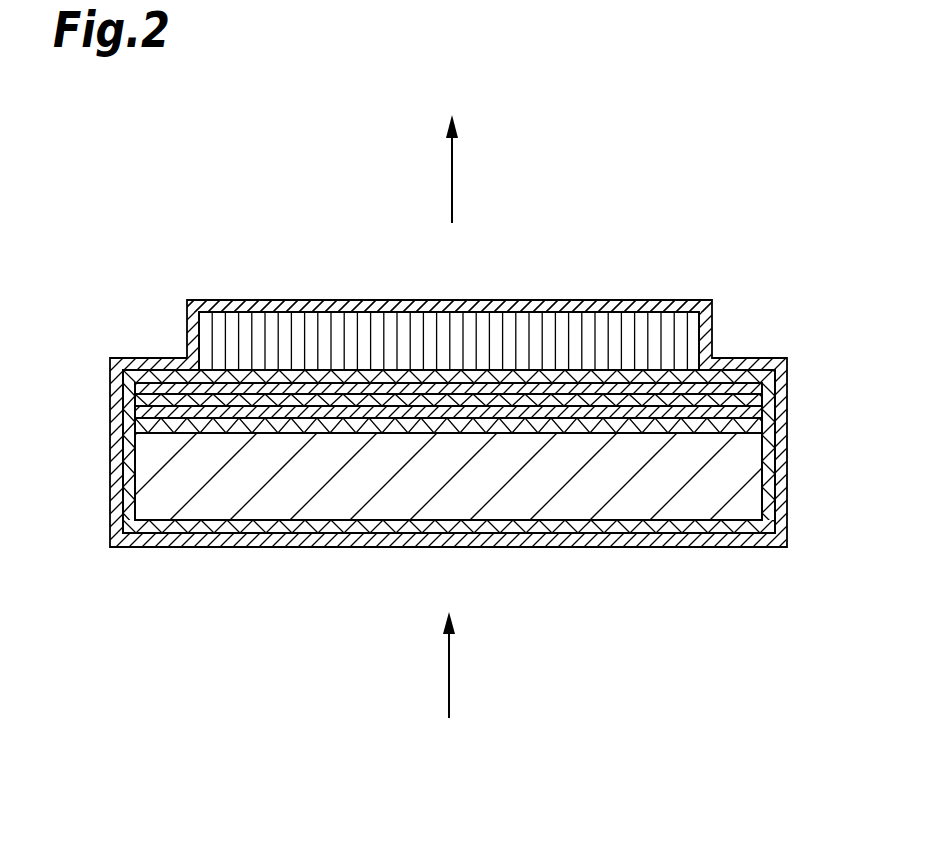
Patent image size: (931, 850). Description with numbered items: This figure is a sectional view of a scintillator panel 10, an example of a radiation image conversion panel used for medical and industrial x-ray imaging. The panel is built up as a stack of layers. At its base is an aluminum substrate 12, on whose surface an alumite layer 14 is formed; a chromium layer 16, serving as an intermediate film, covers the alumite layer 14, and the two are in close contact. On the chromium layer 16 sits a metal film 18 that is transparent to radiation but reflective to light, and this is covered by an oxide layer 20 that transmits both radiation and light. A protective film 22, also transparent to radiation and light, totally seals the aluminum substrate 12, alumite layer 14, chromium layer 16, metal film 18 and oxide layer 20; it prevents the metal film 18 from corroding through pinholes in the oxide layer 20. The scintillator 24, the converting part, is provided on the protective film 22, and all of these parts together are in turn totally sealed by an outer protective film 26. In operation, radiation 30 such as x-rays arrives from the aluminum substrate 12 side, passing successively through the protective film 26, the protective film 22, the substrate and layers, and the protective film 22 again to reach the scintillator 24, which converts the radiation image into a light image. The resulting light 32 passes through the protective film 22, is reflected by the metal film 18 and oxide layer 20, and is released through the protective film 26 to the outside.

The scintillator panel 10 is at (704, 129).
The aluminum substrate 12 is at (755, 477).
The alumite layer 14 is at (778, 442).
The chromium layer 16 is at (750, 412).
The metal film 18 is at (748, 388).
The oxide layer 20 is at (777, 373).
The protective film 22 is at (743, 380).
The scintillator 24 is at (652, 335).
The protective film 26 is at (605, 300).
The radiation 30 is at (449, 668).
The light 32 is at (452, 173).